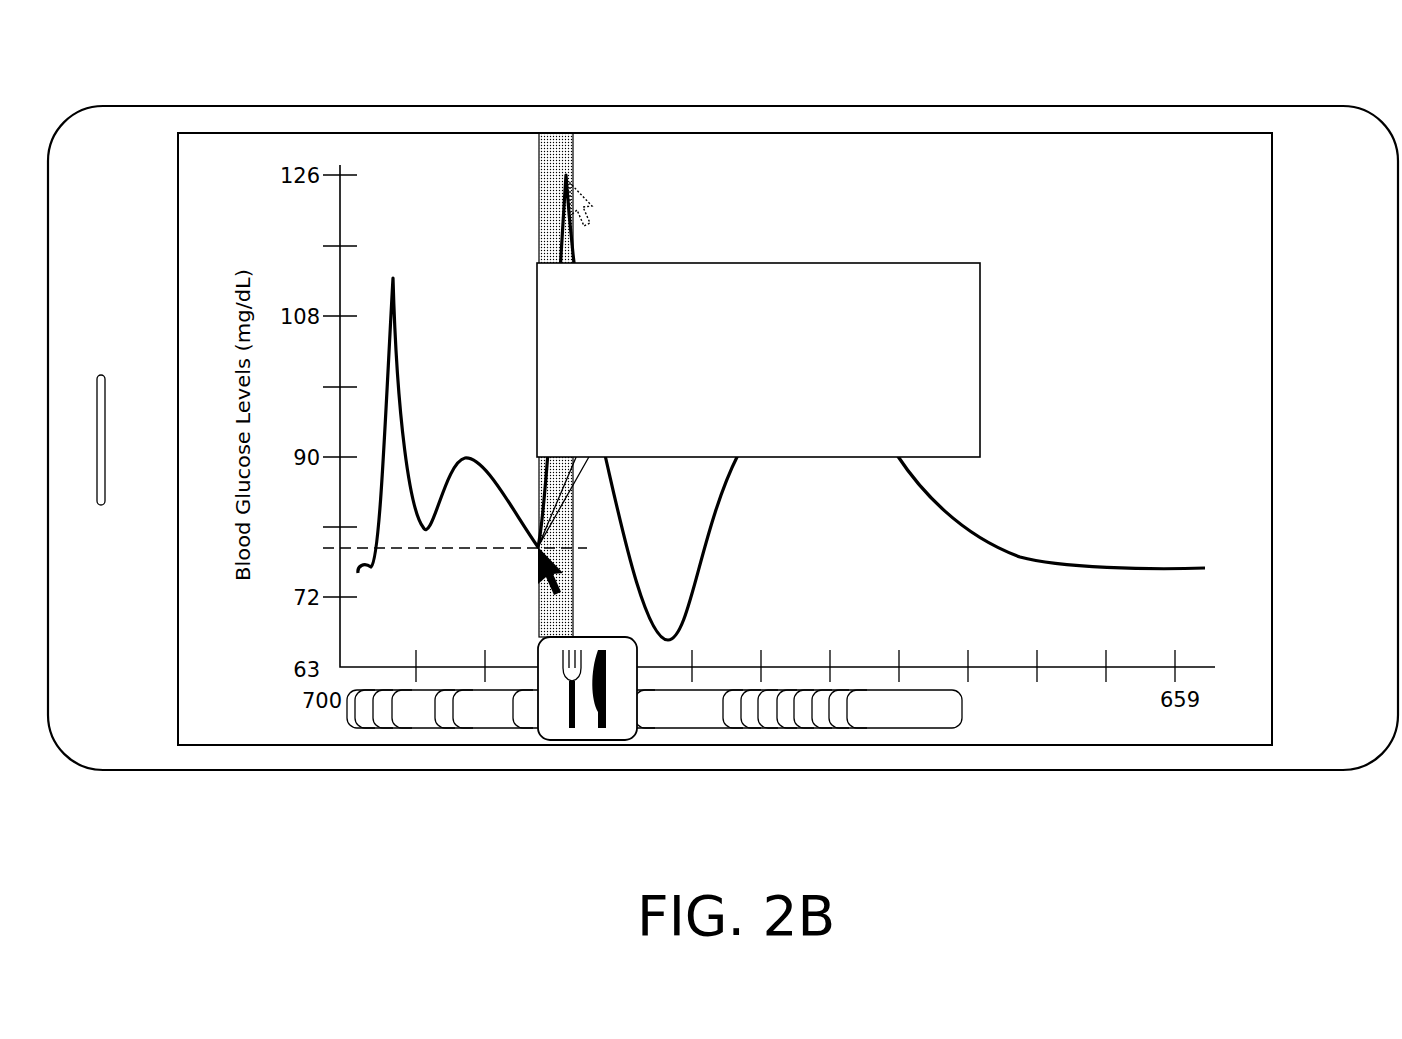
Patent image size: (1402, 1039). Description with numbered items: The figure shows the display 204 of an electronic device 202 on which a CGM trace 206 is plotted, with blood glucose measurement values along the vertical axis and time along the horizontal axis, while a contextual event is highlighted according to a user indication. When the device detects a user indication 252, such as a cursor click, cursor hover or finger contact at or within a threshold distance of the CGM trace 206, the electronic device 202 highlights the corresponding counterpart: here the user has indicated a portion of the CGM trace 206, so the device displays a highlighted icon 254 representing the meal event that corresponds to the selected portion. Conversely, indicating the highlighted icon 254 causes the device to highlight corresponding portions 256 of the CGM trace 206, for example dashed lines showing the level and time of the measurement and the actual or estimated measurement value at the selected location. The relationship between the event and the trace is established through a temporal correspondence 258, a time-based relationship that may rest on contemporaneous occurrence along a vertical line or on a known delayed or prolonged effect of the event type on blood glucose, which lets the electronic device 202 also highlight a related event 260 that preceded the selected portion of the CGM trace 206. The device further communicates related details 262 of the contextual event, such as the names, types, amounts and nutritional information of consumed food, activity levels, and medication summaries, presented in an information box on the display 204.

The electronic device 202 is at (752, 106).
The display 204 is at (1183, 150).
The CGM trace 206 is at (1020, 557).
The user indication 252 is at (538, 547).
The highlighted icon 254 is at (618, 715).
The corresponding portions 256 is at (538, 547).
The temporal correspondence 258 is at (555, 133).
The related event 260 is at (578, 180).
The related details 262 is at (945, 330).